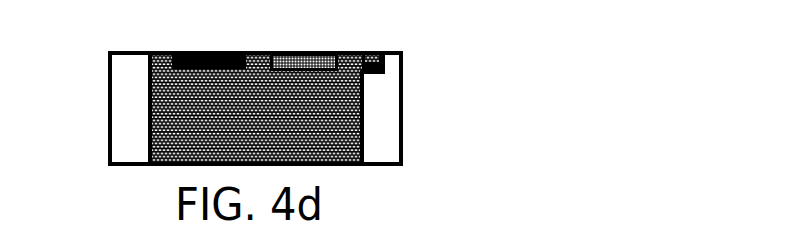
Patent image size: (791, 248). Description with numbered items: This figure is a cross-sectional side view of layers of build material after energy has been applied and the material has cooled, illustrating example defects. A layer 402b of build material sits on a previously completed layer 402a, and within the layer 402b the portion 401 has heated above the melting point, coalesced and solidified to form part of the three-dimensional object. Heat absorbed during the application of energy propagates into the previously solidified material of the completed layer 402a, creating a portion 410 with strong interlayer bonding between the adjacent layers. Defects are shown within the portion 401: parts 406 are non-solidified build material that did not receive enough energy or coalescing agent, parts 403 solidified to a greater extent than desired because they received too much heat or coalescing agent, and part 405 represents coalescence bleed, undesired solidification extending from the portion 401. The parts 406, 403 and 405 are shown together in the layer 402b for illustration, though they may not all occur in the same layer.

The portion 401 is at (159, 53).
The completed layer 402a is at (110, 147).
The layer 402b is at (110, 94).
The parts 403 is at (225, 52).
The part 405 is at (372, 52).
The parts 406 is at (290, 53).
The portion 410 is at (363, 133).